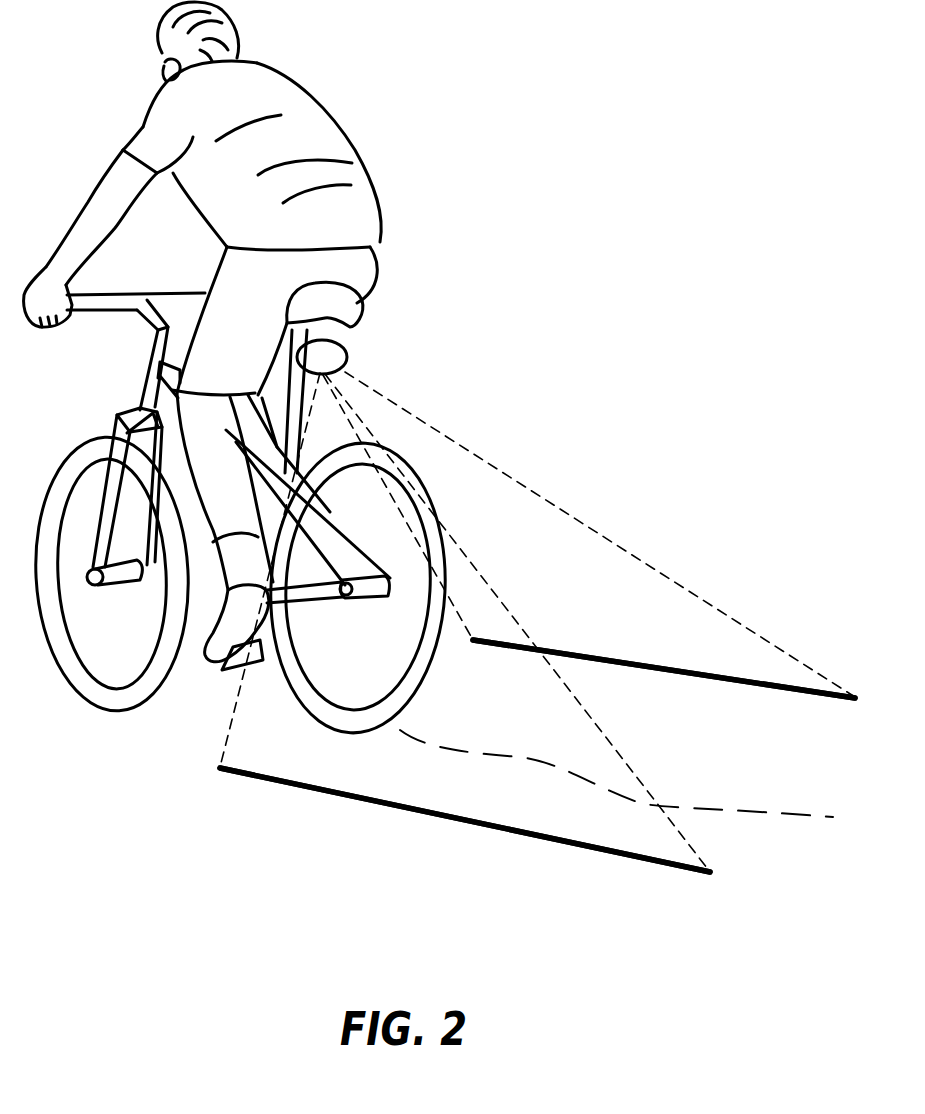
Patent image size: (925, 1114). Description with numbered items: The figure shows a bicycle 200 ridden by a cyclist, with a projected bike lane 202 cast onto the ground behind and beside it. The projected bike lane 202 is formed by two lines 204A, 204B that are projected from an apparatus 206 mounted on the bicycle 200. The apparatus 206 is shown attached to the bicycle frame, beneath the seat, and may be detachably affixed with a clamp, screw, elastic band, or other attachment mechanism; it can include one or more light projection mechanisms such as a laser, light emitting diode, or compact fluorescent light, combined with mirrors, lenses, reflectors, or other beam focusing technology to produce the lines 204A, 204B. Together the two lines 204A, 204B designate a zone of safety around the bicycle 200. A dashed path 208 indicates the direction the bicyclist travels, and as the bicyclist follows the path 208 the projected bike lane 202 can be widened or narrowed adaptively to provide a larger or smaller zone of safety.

The bicycle 200 is at (117, 413).
The projected bike lane 202 is at (718, 744).
The first line 204A is at (547, 647).
The second line 204B is at (437, 783).
The apparatus 206 is at (347, 340).
The path 208 is at (457, 750).